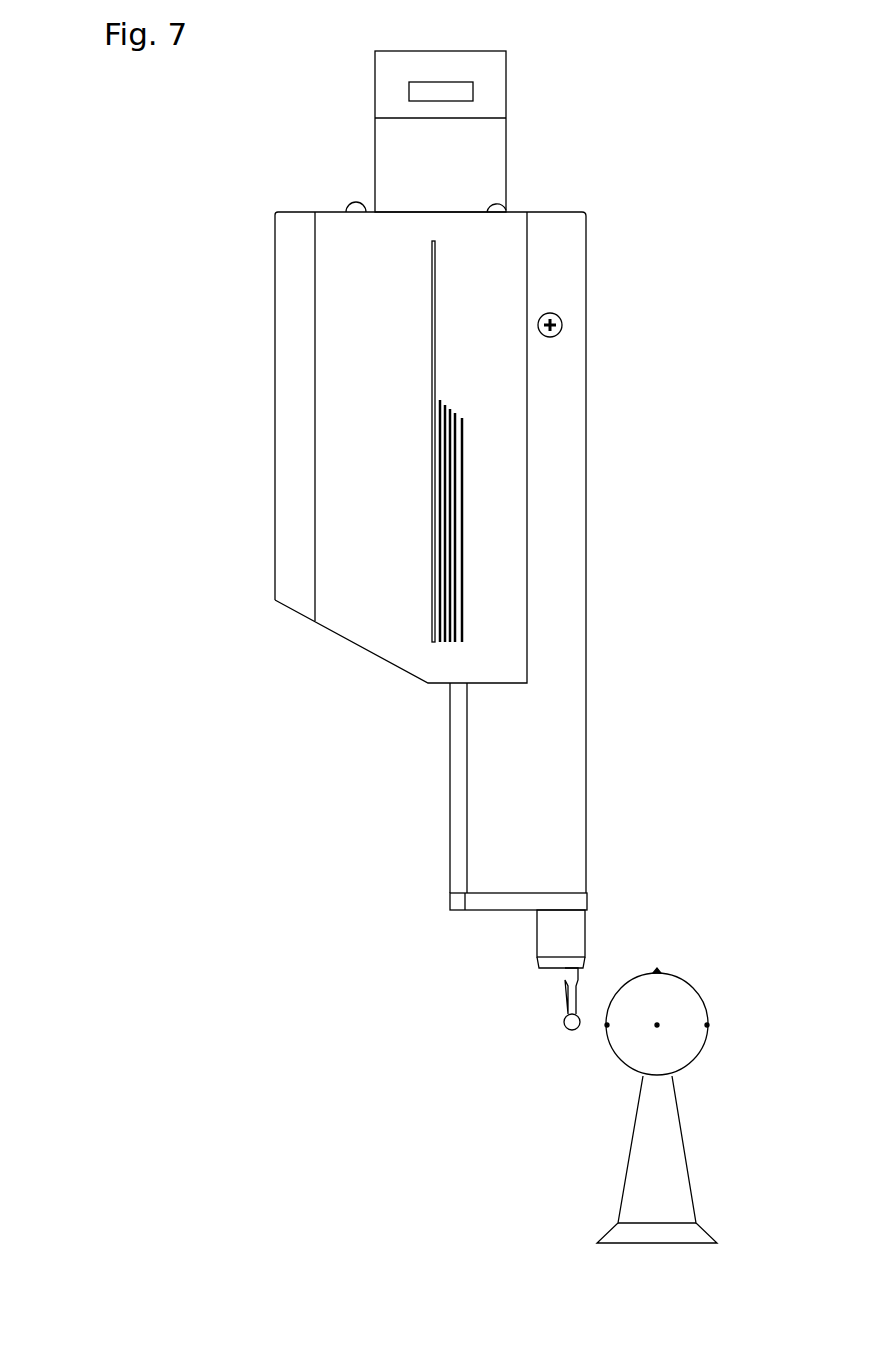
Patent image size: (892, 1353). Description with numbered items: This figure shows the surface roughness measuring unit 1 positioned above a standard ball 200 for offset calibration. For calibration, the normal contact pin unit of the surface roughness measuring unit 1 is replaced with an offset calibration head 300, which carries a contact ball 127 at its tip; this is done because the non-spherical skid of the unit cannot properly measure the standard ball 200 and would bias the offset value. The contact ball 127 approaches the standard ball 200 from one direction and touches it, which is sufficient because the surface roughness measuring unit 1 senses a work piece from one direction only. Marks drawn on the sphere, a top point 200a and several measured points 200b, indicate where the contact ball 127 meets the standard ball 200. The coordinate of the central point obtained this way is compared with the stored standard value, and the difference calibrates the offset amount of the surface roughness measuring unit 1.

The surface roughness measuring unit 1 is at (622, 337).
The offset calibration head 300 is at (597, 919).
The contact ball 127 is at (564, 1025).
The standard ball 200 is at (696, 990).
The top point of reference sphere 200a is at (657, 971).
The measurement points on reference sphere 200b is at (606, 1027).